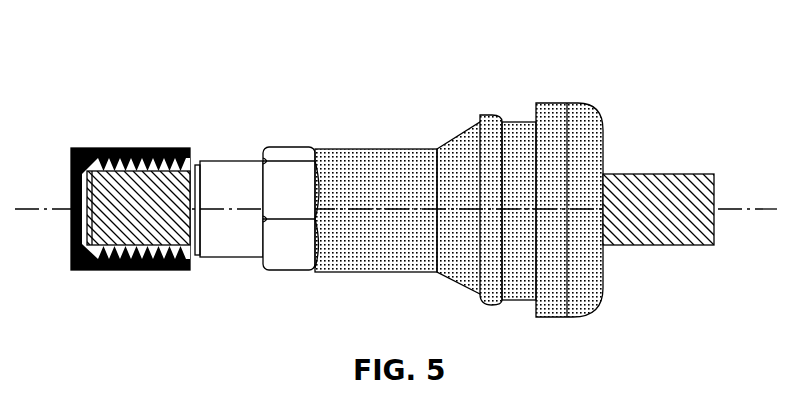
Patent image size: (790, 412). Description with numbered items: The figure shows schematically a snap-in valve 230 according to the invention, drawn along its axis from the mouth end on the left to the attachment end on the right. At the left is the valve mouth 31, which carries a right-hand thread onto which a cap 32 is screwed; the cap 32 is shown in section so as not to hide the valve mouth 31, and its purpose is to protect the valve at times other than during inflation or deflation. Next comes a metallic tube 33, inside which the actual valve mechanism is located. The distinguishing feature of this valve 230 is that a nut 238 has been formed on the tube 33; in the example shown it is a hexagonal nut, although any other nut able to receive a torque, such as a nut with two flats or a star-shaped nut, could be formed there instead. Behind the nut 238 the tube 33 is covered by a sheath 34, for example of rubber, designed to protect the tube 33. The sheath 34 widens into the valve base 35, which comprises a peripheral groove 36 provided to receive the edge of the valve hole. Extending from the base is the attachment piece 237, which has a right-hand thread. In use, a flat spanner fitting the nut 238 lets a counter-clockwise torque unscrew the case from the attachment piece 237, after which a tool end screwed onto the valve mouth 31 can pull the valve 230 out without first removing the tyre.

The valve 230 is at (173, 87).
The valve mouth 31 is at (197, 157).
The cap 32 is at (158, 270).
The metallic tube 33 is at (220, 157).
The nut 238 is at (288, 157).
The sheath 34 is at (375, 172).
The valve base 35 is at (460, 148).
The peripheral groove 36 is at (517, 145).
The attachment piece 237 is at (673, 193).